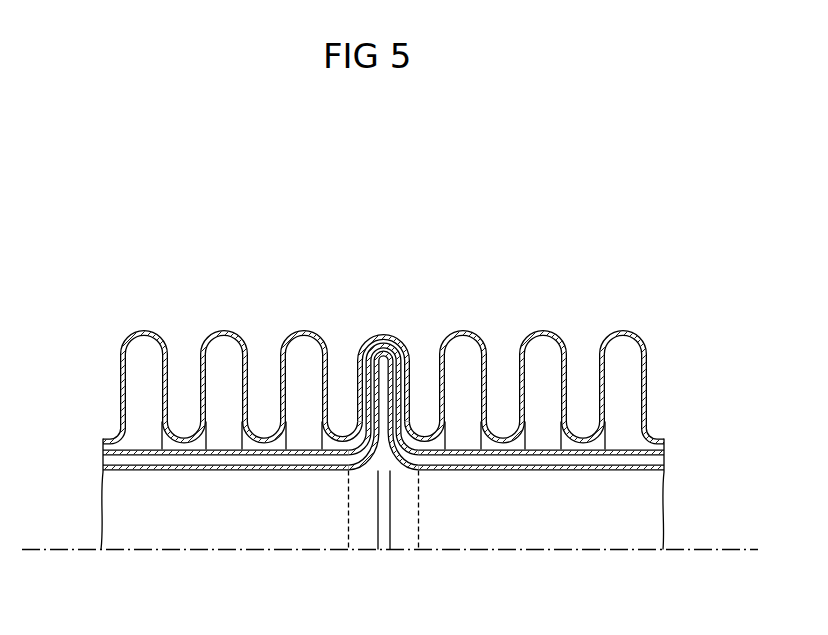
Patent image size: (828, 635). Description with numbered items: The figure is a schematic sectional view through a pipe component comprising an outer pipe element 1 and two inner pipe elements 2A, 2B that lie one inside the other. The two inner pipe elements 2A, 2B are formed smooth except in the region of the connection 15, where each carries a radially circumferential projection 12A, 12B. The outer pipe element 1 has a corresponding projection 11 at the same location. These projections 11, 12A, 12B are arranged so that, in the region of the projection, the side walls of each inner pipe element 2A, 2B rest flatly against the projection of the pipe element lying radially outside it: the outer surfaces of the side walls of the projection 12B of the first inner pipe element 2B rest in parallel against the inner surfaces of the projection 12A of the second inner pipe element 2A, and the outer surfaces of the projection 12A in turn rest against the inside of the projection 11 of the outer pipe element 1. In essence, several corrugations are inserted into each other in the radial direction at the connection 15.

The outer pipe element 1 is at (646, 378).
The second inner pipe element 2A is at (664, 449).
The first inner pipe element 2B is at (660, 472).
The projection of the outer pipe element 11 is at (394, 338).
The projection of the second inner pipe element 12A is at (410, 358).
The projection of the first inner pipe element 12B is at (384, 432).
The connection 15 is at (392, 383).